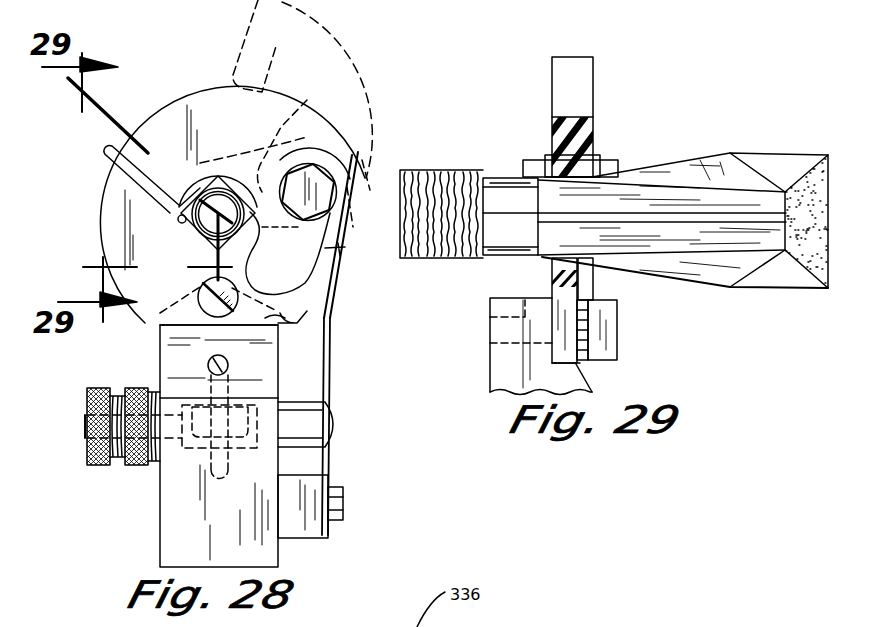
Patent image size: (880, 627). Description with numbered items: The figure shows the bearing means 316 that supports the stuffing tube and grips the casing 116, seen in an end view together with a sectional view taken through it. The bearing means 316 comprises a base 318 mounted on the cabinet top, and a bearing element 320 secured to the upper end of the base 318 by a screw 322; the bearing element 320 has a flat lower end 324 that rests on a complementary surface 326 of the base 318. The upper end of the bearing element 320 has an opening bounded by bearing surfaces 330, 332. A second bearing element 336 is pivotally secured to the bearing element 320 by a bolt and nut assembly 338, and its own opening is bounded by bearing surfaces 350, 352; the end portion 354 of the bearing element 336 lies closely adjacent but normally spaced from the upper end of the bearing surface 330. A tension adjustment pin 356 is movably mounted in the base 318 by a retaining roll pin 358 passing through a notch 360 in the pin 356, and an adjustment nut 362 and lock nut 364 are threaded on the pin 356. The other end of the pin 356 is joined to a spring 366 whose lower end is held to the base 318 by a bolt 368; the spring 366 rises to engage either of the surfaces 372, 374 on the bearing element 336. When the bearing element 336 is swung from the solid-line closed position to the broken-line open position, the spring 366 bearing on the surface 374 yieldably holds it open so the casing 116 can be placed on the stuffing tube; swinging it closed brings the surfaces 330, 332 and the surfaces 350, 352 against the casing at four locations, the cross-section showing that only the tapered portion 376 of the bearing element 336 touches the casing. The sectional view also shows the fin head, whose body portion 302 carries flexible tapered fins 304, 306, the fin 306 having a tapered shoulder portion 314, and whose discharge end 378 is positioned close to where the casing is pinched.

In FIG. 28, the casings 116 is at (253, 226).
In FIG. 29, the casings 116 is at (440, 170).
In FIG. 28, the body portion 302 is at (245, 247).
In FIG. 29, the body portion 302 is at (698, 233).
In FIG. 29, the flexible tapered fin 304 is at (730, 152).
In FIG. 29, the flexible tapered fin 306 is at (730, 290).
In FIG. 29, the tapered shoulder portion 314 is at (707, 270).
In FIG. 28, the bearing means 316 is at (212, 68).
In FIG. 29, the bearing means 316 is at (621, 58).
In FIG. 28, the base 318 is at (205, 553).
In FIG. 28, the bearing element 320 is at (107, 217).
In FIG. 28, the screw 322 is at (160, 322).
In FIG. 29, the screw 322 is at (613, 338).
In FIG. 28, the flat lower end 324 is at (280, 318).
In FIG. 29, the flat lower end 324 is at (557, 357).
In FIG. 28, the complementary surface 326 is at (298, 331).
In FIG. 29, the complementary surface 326 is at (582, 366).
In FIG. 28, the bearing surface 330 is at (181, 223).
In FIG. 29, the bearing surface 330 is at (552, 263).
In FIG. 28, the bearing surface 332 is at (212, 268).
In FIG. 28, the bearing element 336 is at (173, 93).
In FIG. 29, the bearing element 336 is at (597, 96).
In FIG. 28, the bolt and nut assembly 338 is at (303, 170).
In FIG. 28, the bearing surface 350 is at (268, 62).
In FIG. 28, the bearing surface 352 is at (220, 176).
In FIG. 28, the end portion 354 is at (117, 143).
In FIG. 28, the tension adjustment pin 356 is at (338, 418).
In FIG. 28, the retaining roll pin 358 is at (213, 362).
In FIG. 28, the notch 360 is at (278, 447).
In FIG. 28, the adjustment nut 362 is at (132, 467).
In FIG. 28, the lock nut 364 is at (93, 467).
In FIG. 28, the spring 366 is at (323, 368).
In FIG. 28, the bolt 368 is at (345, 502).
In FIG. 28, the surface 372 is at (345, 249).
In FIG. 28, the surface 374 is at (338, 154).
In FIG. 29, the tapered portion 376 is at (592, 150).
In FIG. 29, the discharge end 378 is at (793, 200).